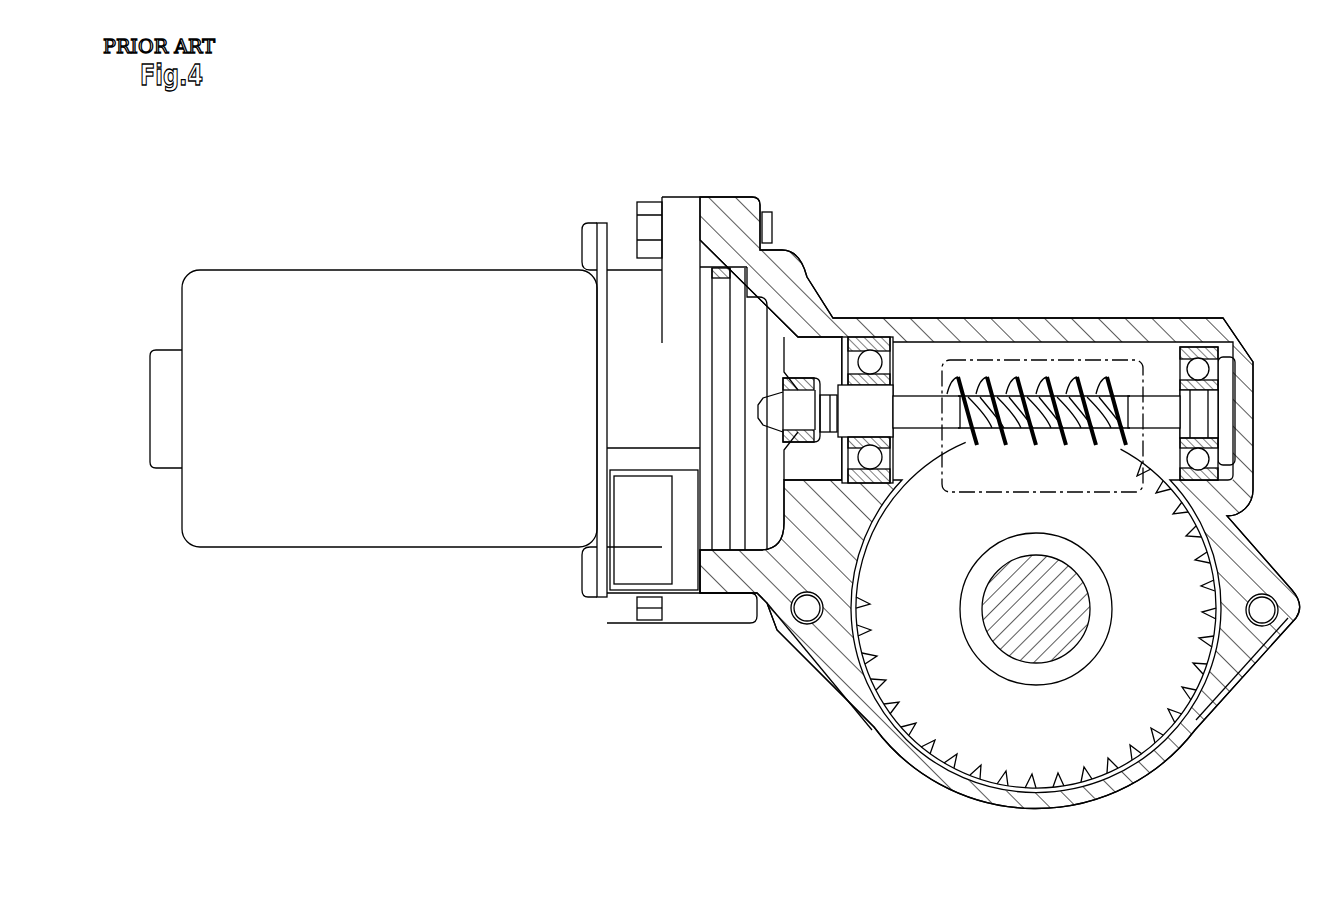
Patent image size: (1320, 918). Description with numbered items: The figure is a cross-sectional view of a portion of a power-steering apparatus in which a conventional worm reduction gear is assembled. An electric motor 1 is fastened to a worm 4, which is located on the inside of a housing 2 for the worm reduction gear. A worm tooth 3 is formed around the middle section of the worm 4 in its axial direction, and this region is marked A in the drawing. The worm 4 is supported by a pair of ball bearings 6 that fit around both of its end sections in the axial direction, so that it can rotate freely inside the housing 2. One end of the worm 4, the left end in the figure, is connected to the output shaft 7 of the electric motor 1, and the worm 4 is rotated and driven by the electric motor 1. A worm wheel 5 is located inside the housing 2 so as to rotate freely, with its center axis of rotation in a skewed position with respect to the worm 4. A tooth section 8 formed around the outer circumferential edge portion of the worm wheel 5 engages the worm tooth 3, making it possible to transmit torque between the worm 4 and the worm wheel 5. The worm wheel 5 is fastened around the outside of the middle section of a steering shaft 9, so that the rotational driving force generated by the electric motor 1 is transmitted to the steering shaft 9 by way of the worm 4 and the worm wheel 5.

The electric motor 1 is at (397, 293).
The housing 2 is at (1055, 334).
The worm tooth 3 is at (995, 372).
The worm 4 is at (926, 396).
The worm wheel 5 is at (1043, 672).
The bearing 6 is at (870, 358).
The output shaft 7 is at (797, 383).
The tooth section 8 is at (1127, 453).
The steering shaft 9 is at (1050, 615).
The region A is at (1128, 360).